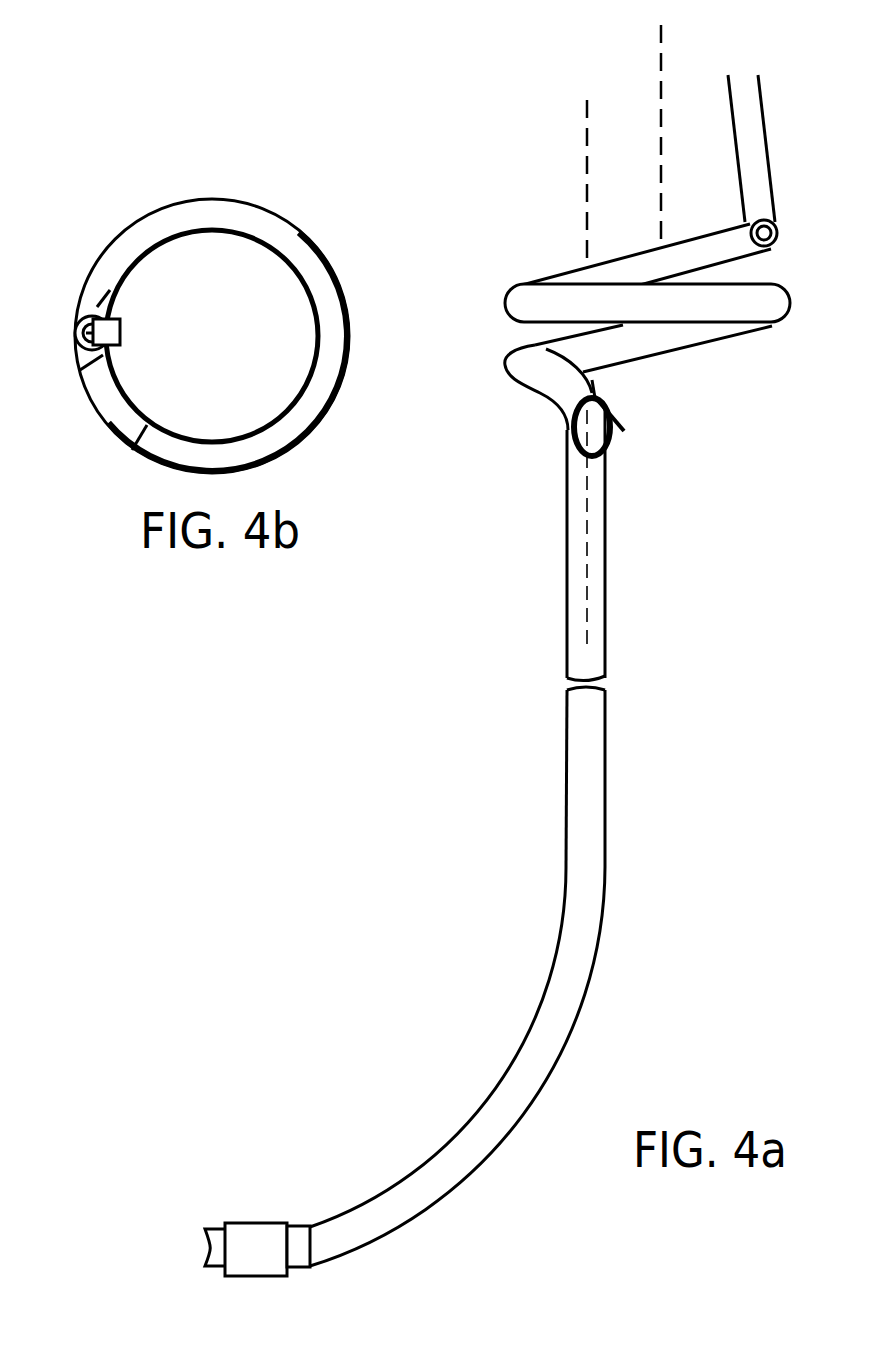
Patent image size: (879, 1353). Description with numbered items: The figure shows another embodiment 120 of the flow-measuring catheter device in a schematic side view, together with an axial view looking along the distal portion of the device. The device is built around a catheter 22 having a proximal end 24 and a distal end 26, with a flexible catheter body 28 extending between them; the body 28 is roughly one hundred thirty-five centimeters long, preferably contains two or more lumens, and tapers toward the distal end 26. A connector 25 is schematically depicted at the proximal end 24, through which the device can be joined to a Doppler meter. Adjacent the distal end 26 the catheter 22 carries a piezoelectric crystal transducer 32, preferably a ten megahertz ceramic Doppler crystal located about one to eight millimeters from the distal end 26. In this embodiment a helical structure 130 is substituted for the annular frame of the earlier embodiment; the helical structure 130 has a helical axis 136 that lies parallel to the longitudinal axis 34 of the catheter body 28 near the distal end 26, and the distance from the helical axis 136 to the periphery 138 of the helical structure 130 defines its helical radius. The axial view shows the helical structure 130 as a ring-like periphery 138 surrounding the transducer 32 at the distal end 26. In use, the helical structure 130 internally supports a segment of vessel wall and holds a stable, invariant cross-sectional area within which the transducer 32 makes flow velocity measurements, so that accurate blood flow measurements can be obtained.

In FIG. 4A, the catheter 22 is at (610, 850).
In FIG. 4A, the proximal end 24 is at (330, 1262).
In FIG. 4A, the connector 25 is at (258, 1276).
In FIG. 4B, the distal end 26 is at (76, 340).
In FIG. 4A, the distal end 26 is at (565, 417).
In FIG. 4A, the catheter body 28 is at (604, 765).
In FIG. 4B, the piezoelectric crystal transducer 32 is at (120, 333).
In FIG. 4A, the piezoelectric crystal transducer 32 is at (625, 417).
In FIG. 4A, the longitudinal axis 34 is at (587, 102).
In FIG. 4A, the another embodiment 120 is at (650, 930).
In FIG. 4B, the helical structure 130 is at (297, 248).
In FIG. 4A, the helical structure 130 is at (730, 332).
In FIG. 4A, the helical axis 136 is at (661, 38).
In FIG. 4B, the periphery 138 is at (197, 200).
In FIG. 4A, the periphery 138 is at (780, 285).